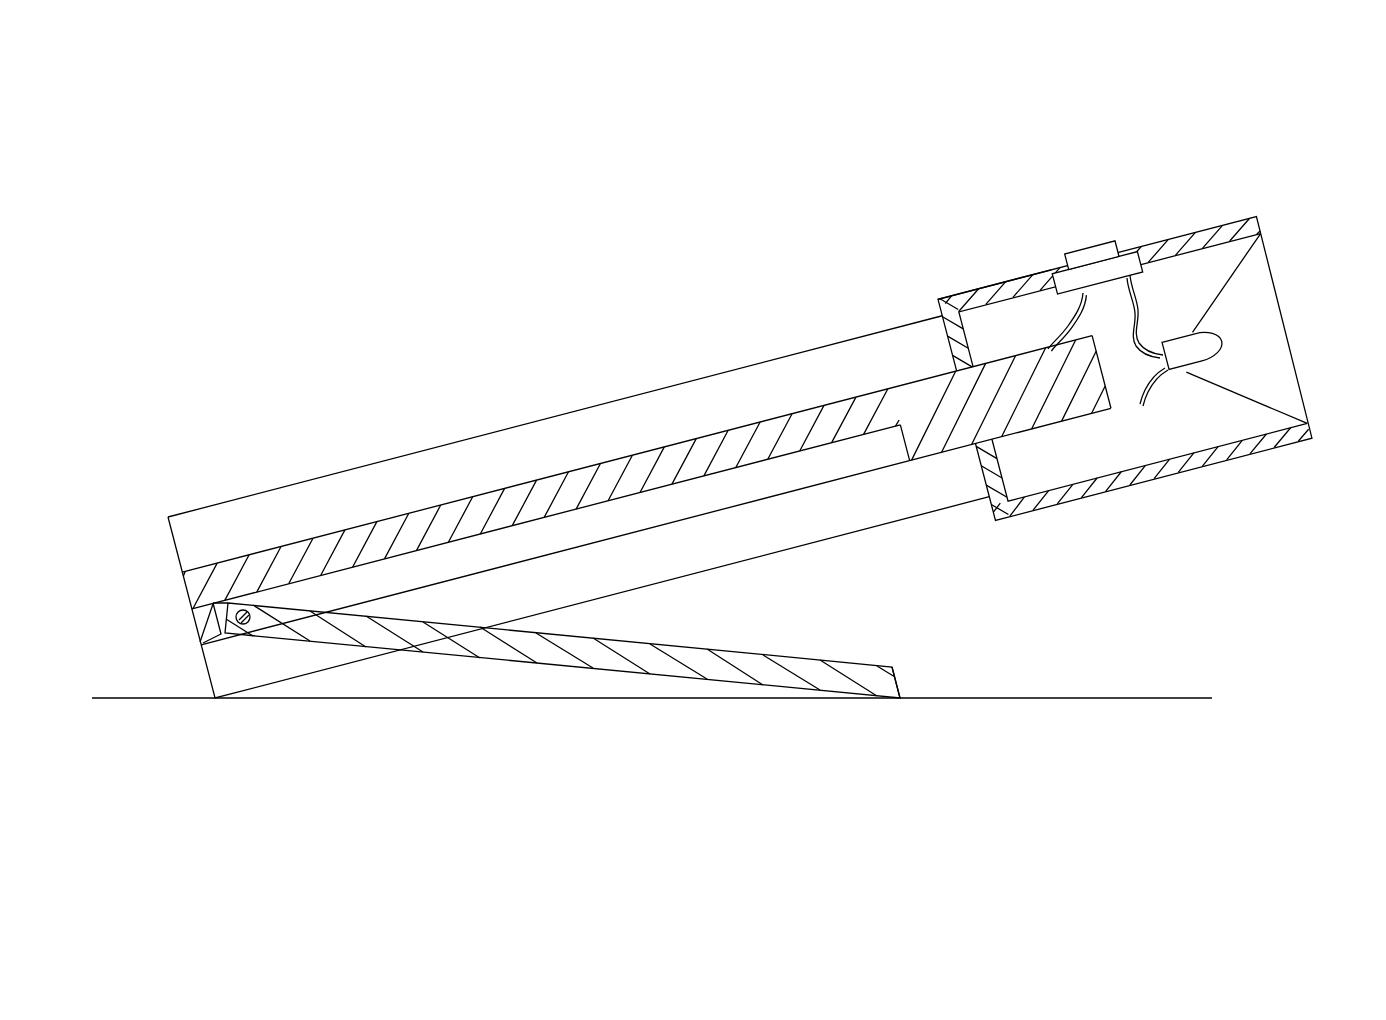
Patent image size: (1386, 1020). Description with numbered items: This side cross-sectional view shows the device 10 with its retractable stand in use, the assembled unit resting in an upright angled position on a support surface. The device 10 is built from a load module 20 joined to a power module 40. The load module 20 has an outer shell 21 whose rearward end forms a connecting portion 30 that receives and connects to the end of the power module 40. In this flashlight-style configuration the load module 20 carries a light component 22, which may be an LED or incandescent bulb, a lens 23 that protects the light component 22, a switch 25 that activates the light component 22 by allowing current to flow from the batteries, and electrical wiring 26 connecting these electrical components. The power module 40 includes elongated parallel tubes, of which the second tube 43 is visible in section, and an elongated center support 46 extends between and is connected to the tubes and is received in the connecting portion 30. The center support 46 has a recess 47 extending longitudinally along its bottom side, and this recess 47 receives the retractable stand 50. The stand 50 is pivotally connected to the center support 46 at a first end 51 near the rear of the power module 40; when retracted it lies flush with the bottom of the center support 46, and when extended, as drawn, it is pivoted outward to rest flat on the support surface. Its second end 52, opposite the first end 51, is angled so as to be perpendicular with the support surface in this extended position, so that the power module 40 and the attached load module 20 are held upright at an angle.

The device 10 is at (192, 126).
The load module 20 is at (1194, 170).
The outer shell 21 is at (1187, 243).
The light component 22 is at (1212, 353).
The lens 23 is at (1277, 295).
The switch 25 is at (1087, 245).
The electrical wiring 26 is at (1065, 314).
The connecting portion 30 is at (990, 289).
The power module 40 is at (505, 356).
The second tube 43 is at (483, 453).
The center support 46 is at (618, 465).
The recess 47 is at (680, 492).
The retractable stand 50 is at (547, 679).
The first end 51 is at (282, 632).
The second end 52 is at (884, 688).